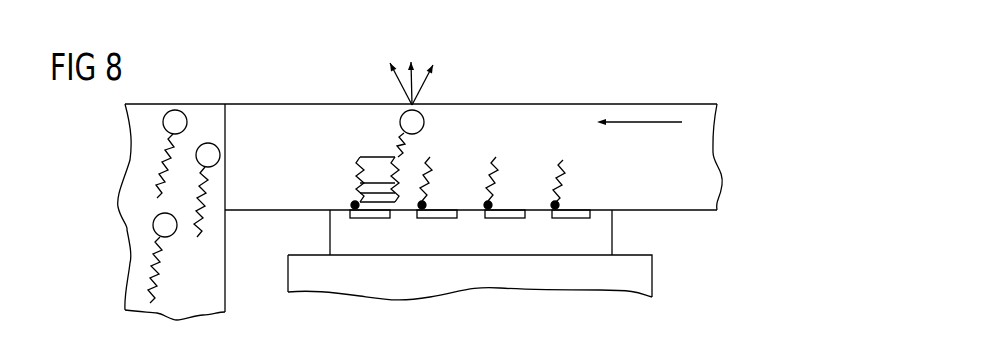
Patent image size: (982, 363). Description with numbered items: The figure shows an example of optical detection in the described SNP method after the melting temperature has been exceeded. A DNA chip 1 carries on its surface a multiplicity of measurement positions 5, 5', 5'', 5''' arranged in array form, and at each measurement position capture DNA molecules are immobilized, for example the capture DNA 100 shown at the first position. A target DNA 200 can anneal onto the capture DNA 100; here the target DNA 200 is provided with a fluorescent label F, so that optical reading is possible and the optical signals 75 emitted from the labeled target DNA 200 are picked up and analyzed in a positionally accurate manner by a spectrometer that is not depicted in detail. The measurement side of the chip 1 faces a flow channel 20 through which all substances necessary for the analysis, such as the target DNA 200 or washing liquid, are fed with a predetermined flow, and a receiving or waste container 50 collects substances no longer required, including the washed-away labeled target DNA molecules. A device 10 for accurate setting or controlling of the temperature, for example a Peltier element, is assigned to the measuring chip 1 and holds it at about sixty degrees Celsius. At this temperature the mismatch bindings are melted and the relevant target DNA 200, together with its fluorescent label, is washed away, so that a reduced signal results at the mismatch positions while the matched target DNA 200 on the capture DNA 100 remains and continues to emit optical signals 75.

The DNA chip 1 is at (598, 237).
The measurement position 5 is at (370, 245).
The measurement position 5' is at (439, 223).
The measurement position 5'' is at (506, 223).
The measurement position 5''' is at (577, 225).
The device for controlling the temperature 10 is at (635, 277).
The flow channel 20 is at (703, 123).
The receiving or waste container 50 is at (132, 217).
The optical signals 75 is at (421, 86).
The capture DNA 100 is at (357, 168).
The target DNA 200 is at (400, 144).